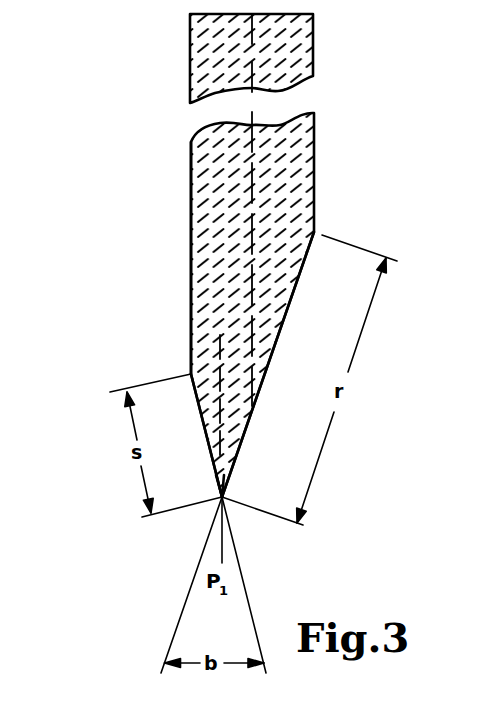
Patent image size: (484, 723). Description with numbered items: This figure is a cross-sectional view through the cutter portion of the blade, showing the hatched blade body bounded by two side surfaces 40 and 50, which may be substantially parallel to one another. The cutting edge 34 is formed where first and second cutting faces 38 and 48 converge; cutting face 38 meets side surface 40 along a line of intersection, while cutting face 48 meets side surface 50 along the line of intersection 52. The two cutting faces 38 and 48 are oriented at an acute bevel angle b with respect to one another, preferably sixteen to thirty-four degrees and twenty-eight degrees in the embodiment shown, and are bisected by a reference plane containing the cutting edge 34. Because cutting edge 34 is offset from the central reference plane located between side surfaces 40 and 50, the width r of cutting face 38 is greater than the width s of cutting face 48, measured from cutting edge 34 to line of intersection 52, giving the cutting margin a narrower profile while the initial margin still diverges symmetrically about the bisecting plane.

The cutting edge 34 is at (222, 497).
The first cutting face 38 is at (306, 269).
The side surface 40 is at (314, 114).
The second cutting face 48 is at (200, 407).
The side surface 50 is at (191, 188).
The line of intersection 52 is at (191, 366).